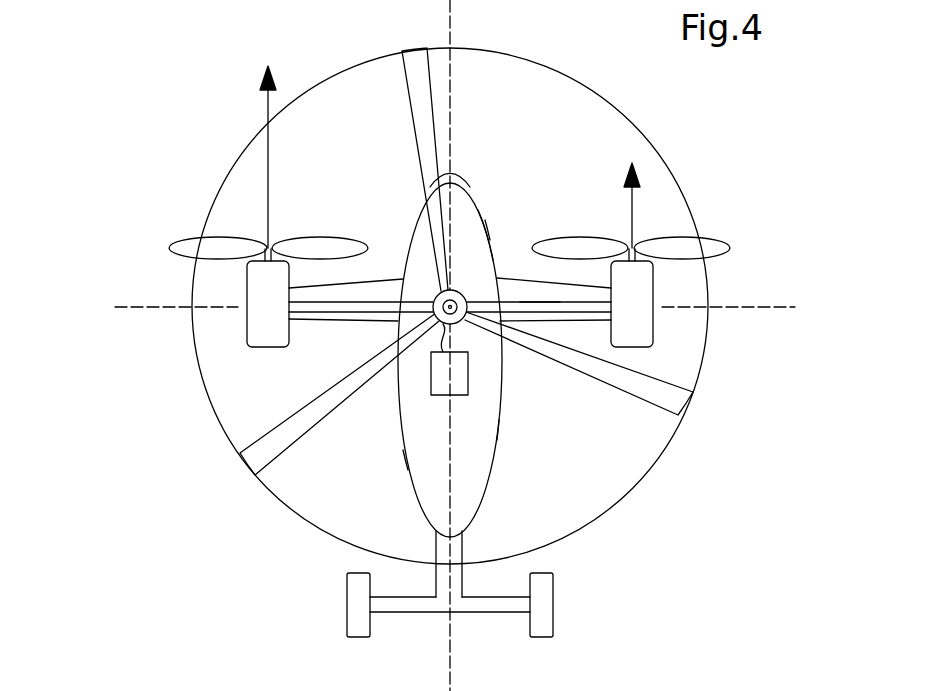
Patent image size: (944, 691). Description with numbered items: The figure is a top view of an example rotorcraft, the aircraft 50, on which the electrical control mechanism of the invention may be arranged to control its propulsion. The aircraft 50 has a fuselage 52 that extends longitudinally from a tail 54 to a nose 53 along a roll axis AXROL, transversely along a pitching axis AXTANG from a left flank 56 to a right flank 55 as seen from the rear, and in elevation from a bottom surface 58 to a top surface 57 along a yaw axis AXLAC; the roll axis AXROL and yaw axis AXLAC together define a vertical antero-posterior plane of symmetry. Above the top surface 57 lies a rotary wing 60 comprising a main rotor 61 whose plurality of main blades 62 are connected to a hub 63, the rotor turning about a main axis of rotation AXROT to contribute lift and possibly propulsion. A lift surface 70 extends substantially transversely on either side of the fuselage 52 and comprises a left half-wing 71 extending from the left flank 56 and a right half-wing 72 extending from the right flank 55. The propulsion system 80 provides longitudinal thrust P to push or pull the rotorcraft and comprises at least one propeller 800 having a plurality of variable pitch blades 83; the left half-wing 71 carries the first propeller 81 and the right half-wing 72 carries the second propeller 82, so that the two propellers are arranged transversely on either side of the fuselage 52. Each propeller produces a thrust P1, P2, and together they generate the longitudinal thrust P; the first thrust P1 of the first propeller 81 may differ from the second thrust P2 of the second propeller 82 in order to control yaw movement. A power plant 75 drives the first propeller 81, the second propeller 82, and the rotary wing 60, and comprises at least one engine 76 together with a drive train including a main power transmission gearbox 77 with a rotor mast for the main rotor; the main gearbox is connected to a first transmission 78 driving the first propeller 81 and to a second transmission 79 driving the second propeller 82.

The aircraft 50 is at (640, 580).
The fuselage 52 is at (493, 463).
The nose 53 is at (470, 247).
The tail 54 is at (470, 613).
The right flank 55 is at (500, 438).
The left flank 56 is at (407, 463).
The top surface 57 is at (485, 210).
The bottom surface 58 is at (508, 230).
The rotary wing 60 is at (497, 311).
The main rotor 61 is at (497, 311).
The blades 62 is at (653, 403).
The hub 63 is at (462, 318).
The lift surface 70 is at (585, 333).
The left half-wing 71 is at (318, 322).
The right half-wing 72 is at (553, 368).
The power plant 75 is at (502, 397).
The engine 76 is at (440, 395).
The main power transmission gearbox 77 is at (445, 292).
The first transmission 78 is at (435, 294).
The second transmission 79 is at (540, 300).
The propulsion system 80 is at (205, 227).
The first propeller 81 is at (213, 325).
The second propeller 82 is at (695, 232).
The variable pitch blades 83 is at (715, 240).
The propeller 800 is at (183, 240).
The first thrust P1 is at (209, 141).
The second thrust P2 is at (637, 210).
The longitudinal thrust P is at (265, 102).
The roll axis AXROL is at (448, 30).
The pitching axis AXTANG is at (476, 350).
The main axis of rotation AXROT is at (300, 440).
The yaw axis AXLAC is at (443, 318).